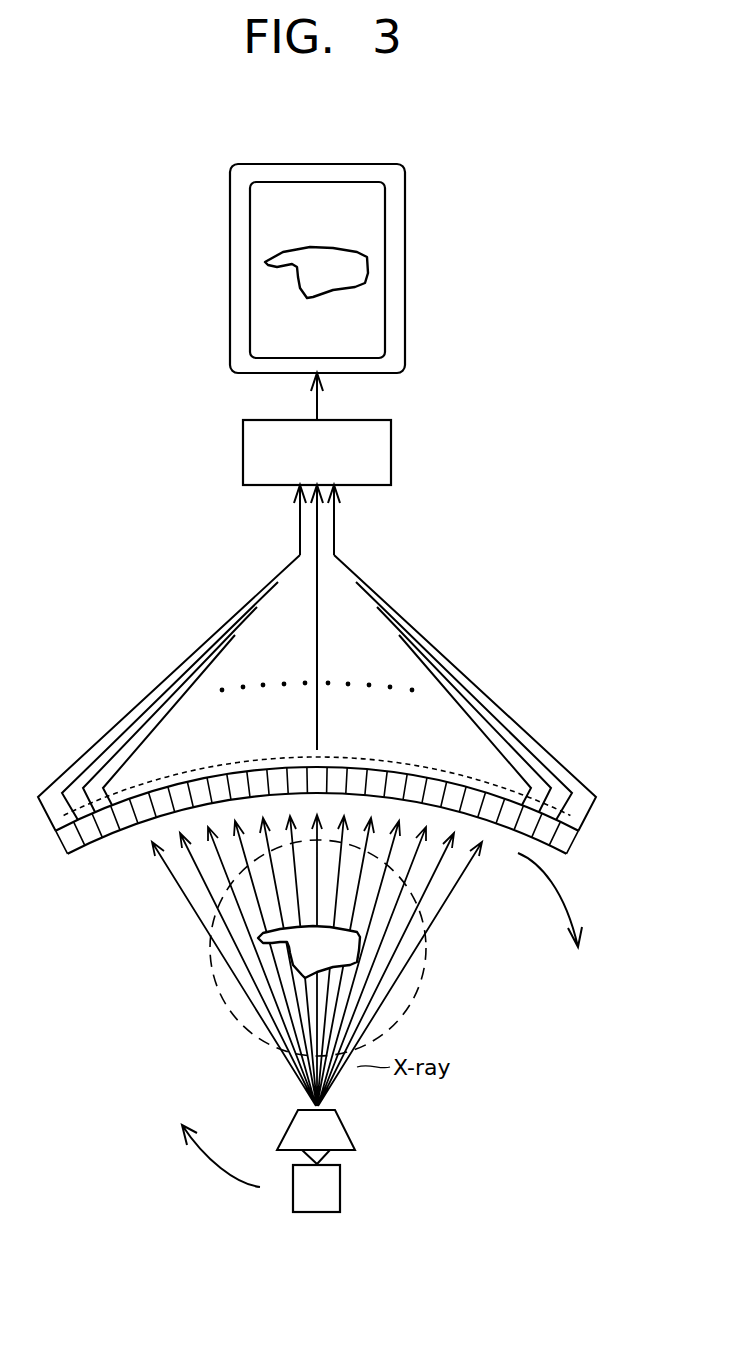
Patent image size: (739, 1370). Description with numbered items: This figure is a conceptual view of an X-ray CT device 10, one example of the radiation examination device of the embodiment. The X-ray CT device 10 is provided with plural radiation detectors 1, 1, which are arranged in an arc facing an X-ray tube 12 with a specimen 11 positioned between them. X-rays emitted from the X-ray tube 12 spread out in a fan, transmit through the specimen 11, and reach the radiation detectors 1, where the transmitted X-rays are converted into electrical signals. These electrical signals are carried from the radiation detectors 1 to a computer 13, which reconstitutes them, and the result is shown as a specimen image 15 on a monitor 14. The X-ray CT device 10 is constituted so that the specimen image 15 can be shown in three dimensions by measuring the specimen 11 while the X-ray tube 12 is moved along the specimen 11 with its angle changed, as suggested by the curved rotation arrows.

The radiation detector 1 is at (68, 855).
The X-ray CT device 10 is at (553, 567).
The specimen 11 is at (350, 942).
The X-ray tube 12 is at (340, 1192).
The computer 13 is at (391, 453).
The monitor 14 is at (387, 217).
The specimen image 15 is at (357, 268).